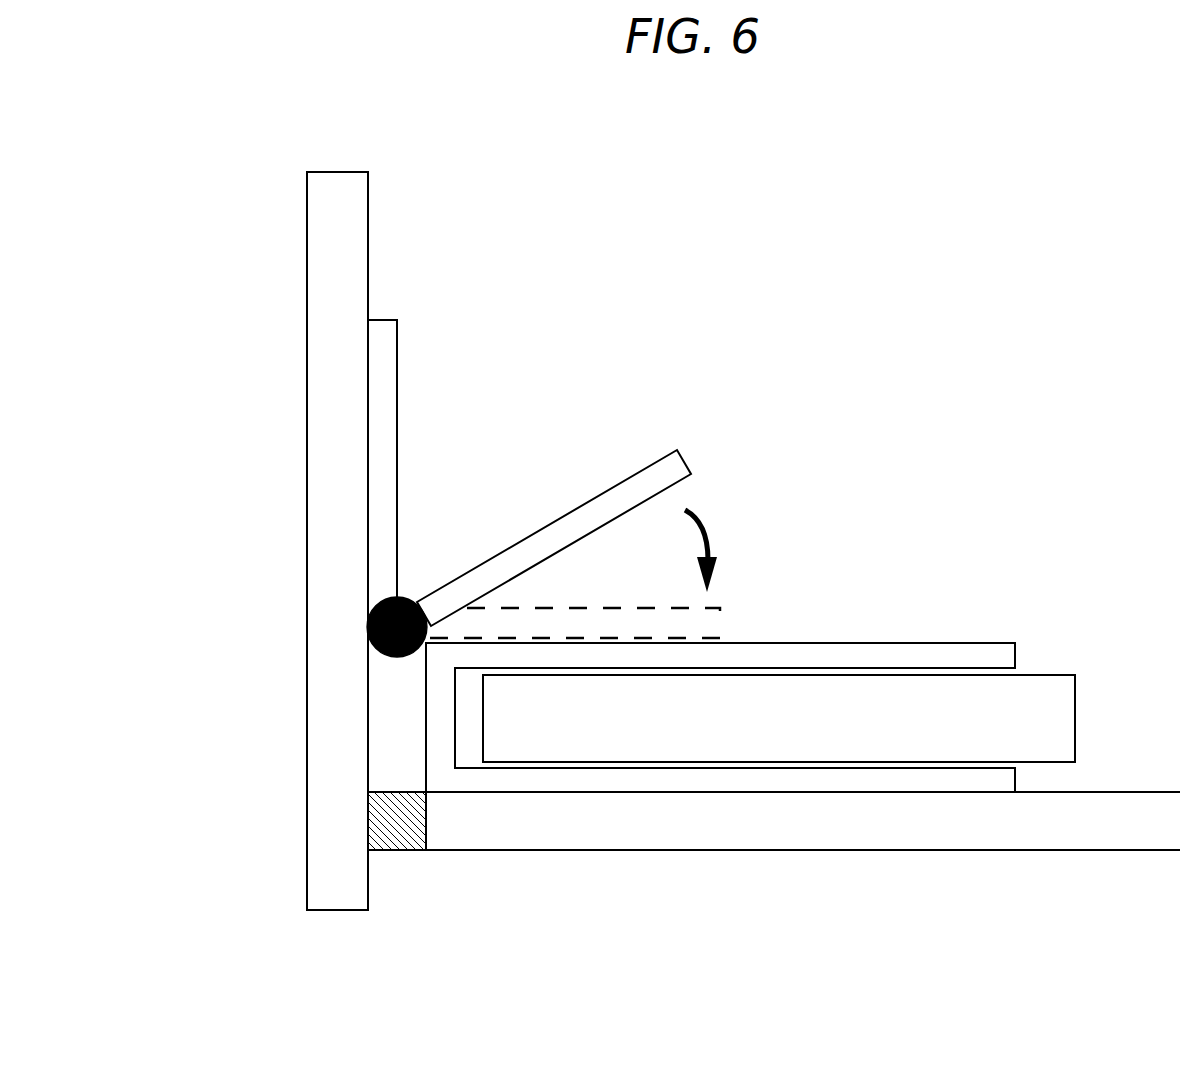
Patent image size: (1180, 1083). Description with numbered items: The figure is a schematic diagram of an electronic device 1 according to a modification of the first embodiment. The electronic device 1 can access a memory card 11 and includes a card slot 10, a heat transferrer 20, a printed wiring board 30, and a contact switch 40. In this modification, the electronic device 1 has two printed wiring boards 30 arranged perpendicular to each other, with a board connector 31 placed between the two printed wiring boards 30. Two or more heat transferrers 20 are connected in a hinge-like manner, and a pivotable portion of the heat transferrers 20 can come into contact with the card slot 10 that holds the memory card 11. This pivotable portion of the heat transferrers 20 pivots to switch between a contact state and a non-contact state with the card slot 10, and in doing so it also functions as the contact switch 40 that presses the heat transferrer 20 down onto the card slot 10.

The electronic device 1 is at (930, 222).
The card slot 10 is at (958, 643).
The memory card 11 is at (1075, 703).
The heat transferrer 20 is at (397, 378).
The printed wiring board 30 is at (307, 290).
The board connector 31 is at (395, 852).
The contact switch 40 is at (683, 462).